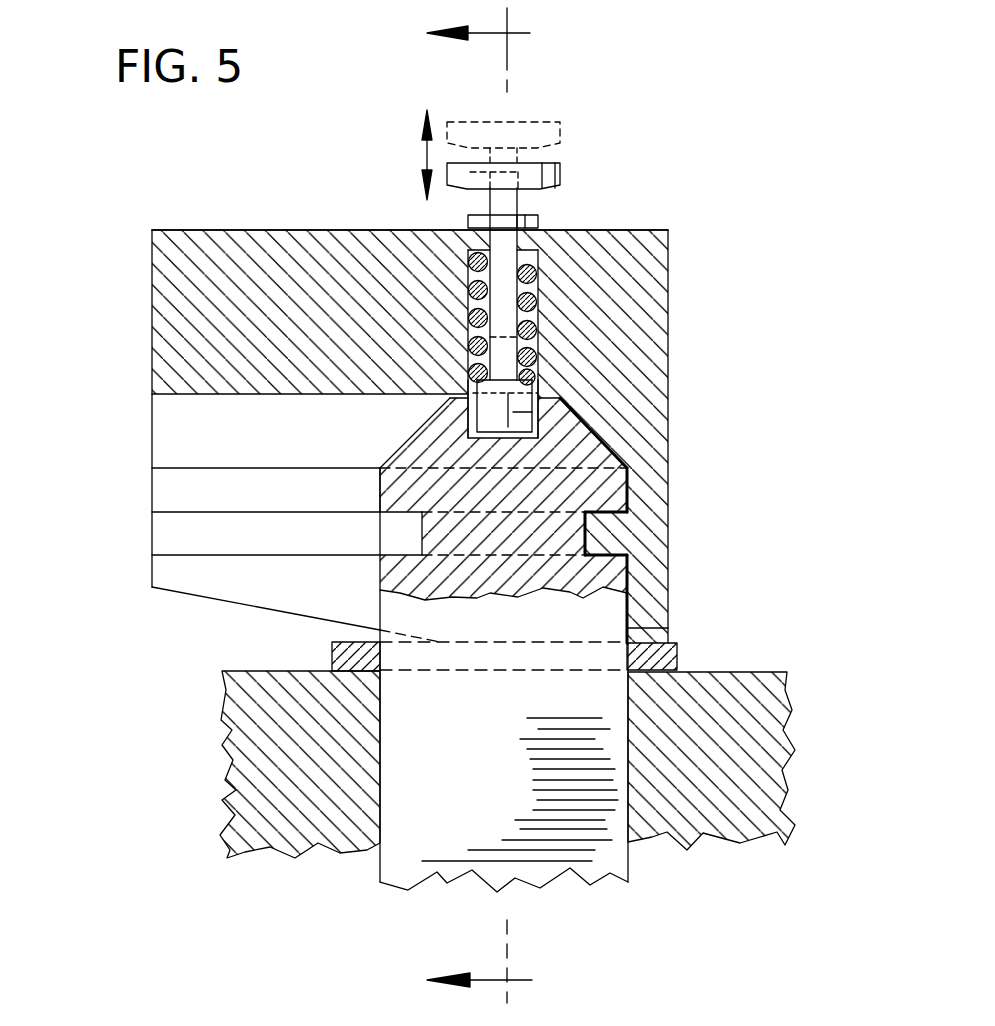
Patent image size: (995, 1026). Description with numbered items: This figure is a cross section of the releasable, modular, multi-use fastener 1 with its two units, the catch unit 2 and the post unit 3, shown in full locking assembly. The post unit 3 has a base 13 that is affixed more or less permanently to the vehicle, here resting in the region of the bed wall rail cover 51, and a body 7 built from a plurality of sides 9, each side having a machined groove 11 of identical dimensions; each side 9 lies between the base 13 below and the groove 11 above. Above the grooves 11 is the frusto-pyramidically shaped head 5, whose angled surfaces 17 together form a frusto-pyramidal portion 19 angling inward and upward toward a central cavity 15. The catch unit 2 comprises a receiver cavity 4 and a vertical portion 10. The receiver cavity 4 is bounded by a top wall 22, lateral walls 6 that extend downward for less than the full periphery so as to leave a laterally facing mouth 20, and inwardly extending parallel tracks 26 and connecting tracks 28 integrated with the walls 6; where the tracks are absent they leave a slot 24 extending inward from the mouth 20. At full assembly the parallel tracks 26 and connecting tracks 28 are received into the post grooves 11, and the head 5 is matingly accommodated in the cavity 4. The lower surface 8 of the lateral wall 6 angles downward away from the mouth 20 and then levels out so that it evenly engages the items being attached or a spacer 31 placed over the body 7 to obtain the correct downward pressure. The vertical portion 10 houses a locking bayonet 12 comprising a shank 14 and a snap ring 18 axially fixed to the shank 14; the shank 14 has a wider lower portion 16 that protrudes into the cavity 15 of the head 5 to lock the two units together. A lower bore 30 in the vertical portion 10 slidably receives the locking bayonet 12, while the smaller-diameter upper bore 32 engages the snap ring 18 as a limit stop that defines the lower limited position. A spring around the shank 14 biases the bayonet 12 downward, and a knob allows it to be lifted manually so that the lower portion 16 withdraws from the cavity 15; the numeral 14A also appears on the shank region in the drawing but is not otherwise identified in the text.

The fastener 1 is at (747, 322).
The catch unit 2 is at (668, 323).
The post unit 3 is at (603, 490).
The receiver cavity 4 is at (172, 432).
The head 5 is at (575, 428).
The lateral walls 6 is at (668, 555).
The body 7 is at (573, 625).
The lower surface 8 is at (240, 603).
The sides 9 is at (668, 623).
The vertical portion 10 is at (340, 230).
The groove 11 is at (650, 528).
The locking bayonet 12 is at (520, 203).
The base 13 is at (515, 880).
The shank 14 is at (470, 222).
The spring seat 14A is at (547, 407).
The central cavity 15 is at (468, 433).
The lower portion 16 is at (470, 287).
The angled surfaces 17 is at (400, 447).
The snap ring 18 is at (500, 237).
The frusto-pyramidal portion 19 is at (395, 490).
The mouth 20 is at (152, 409).
The top wall 22 is at (168, 318).
The slot 24 is at (228, 512).
The parallel tracks 26 is at (175, 545).
The connecting tracks 28 is at (583, 560).
The lower bore 30 is at (540, 283).
The spacer 31 is at (677, 660).
The upper bore 32 is at (612, 229).
The bed wall rail cover 51 is at (733, 732).